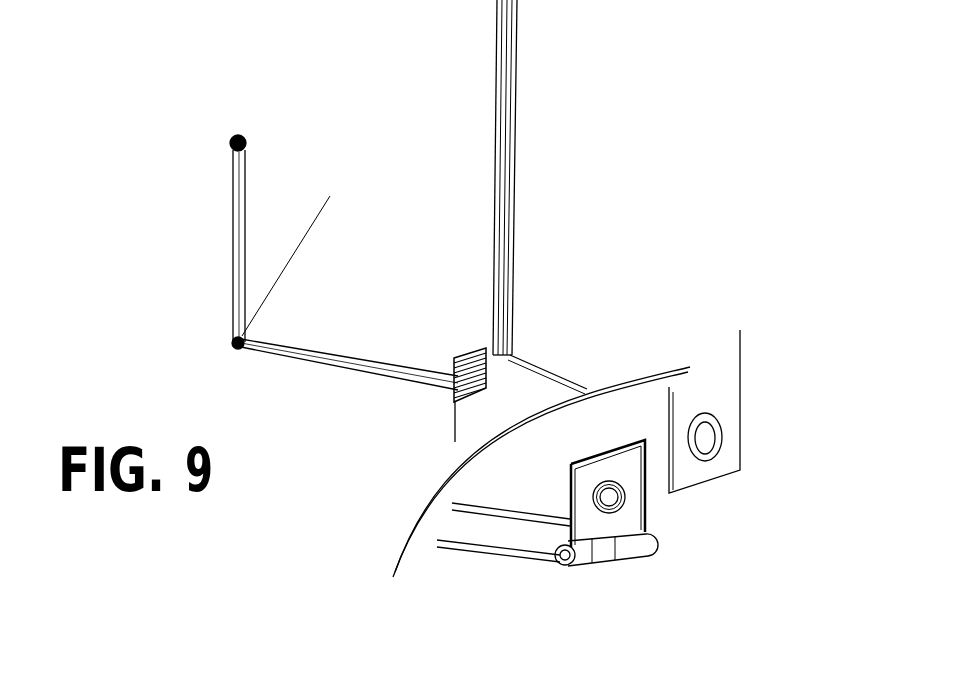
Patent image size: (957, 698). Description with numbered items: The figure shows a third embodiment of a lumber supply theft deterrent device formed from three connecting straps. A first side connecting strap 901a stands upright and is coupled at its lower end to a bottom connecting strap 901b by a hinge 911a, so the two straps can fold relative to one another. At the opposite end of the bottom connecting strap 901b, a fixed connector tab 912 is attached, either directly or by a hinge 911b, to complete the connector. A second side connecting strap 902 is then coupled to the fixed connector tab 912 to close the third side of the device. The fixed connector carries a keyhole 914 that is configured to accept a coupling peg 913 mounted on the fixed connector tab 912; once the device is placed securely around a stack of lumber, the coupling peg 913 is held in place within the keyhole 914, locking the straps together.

The first side connecting strap 901a is at (248, 177).
The bottom connecting strap 901b is at (355, 353).
The second side connecting strap 902 is at (515, 227).
The hinge 911a is at (237, 348).
The hinge 911b is at (610, 552).
The fixed connector tab 912 is at (579, 467).
The coupling peg 913 is at (617, 502).
The keyhole 914 is at (705, 442).